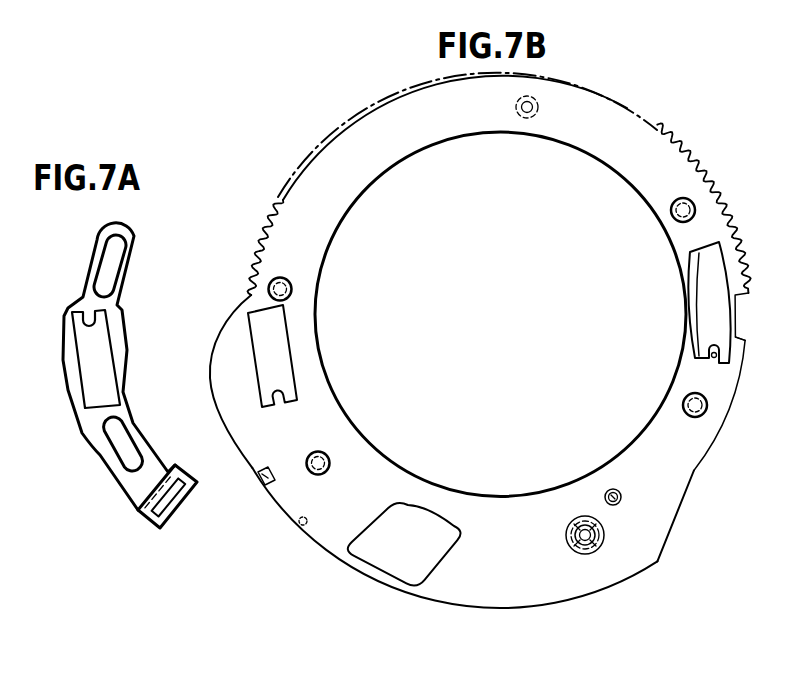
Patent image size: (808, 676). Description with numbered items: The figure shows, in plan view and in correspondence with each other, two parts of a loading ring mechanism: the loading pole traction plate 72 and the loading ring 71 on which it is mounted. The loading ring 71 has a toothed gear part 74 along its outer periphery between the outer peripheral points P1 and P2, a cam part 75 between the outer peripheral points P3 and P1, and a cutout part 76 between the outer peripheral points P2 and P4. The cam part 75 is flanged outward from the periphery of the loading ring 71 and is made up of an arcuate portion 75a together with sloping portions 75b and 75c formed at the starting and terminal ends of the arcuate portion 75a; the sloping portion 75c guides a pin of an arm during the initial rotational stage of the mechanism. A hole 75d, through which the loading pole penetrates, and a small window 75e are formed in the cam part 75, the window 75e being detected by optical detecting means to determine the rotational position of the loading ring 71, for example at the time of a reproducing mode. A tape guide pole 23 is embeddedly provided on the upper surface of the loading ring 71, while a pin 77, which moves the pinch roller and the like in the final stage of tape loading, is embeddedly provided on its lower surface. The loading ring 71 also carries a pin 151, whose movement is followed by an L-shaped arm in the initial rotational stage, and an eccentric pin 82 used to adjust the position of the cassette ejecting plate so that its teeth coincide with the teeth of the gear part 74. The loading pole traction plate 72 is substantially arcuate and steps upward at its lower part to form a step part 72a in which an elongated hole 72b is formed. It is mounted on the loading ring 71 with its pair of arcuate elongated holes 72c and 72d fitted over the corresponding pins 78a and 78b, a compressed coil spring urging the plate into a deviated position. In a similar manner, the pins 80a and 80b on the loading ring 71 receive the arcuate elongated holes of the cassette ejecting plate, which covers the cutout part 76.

In FIG. 7B, the tape guide pole 23 is at (600, 540).
In FIG. 7B, the loading ring 71 is at (655, 86).
In FIG. 7A, the loading pole traction plate 72 is at (135, 218).
In FIG. 7A, the step part 72a is at (141, 520).
In FIG. 7A, the elongated hole 72b is at (175, 506).
In FIG. 7A, the arcuate elongated hole 72c is at (114, 265).
In FIG. 7A, the arcuate elongated hole 72d is at (123, 443).
In FIG. 7B, the gear part 74 is at (686, 137).
In FIG. 7B, the cam part 75 is at (477, 607).
In FIG. 7B, the arcuate portion 75a is at (300, 556).
In FIG. 7B, the sloping portion 75b is at (222, 324).
In FIG. 7B, the sloping portion 75c is at (677, 524).
In FIG. 7B, the hole 75d is at (392, 580).
In FIG. 7B, the small window 75e is at (259, 481).
In FIG. 7B, the cutout part 76 is at (738, 320).
In FIG. 7B, the pin 77 is at (538, 108).
In FIG. 7B, the pin 78a is at (293, 289).
In FIG. 7B, the pin 78b is at (331, 457).
In FIG. 7B, the pin 80a is at (696, 207).
In FIG. 7B, the pin 80b is at (708, 408).
In FIG. 7B, the eccentric pin 82 is at (622, 495).
In FIG. 7B, the pin 151 is at (297, 523).
In FIG. 7B, the outer peripheral point P1 is at (240, 297).
In FIG. 7B, the outer peripheral point P2 is at (752, 292).
In FIG. 7B, the outer peripheral point P3 is at (698, 474).
In FIG. 7B, the outer peripheral point P4 is at (752, 343).